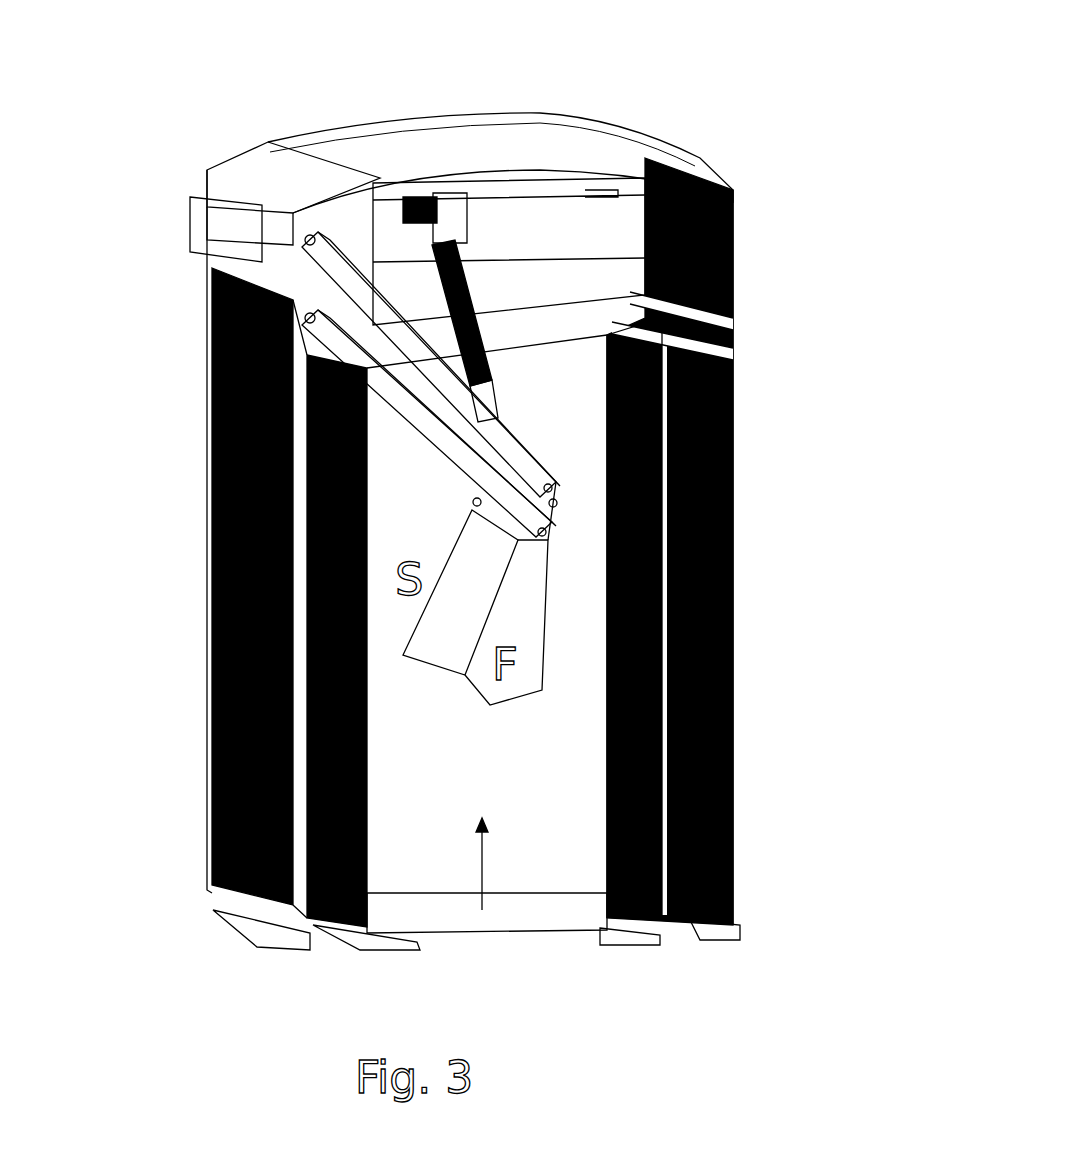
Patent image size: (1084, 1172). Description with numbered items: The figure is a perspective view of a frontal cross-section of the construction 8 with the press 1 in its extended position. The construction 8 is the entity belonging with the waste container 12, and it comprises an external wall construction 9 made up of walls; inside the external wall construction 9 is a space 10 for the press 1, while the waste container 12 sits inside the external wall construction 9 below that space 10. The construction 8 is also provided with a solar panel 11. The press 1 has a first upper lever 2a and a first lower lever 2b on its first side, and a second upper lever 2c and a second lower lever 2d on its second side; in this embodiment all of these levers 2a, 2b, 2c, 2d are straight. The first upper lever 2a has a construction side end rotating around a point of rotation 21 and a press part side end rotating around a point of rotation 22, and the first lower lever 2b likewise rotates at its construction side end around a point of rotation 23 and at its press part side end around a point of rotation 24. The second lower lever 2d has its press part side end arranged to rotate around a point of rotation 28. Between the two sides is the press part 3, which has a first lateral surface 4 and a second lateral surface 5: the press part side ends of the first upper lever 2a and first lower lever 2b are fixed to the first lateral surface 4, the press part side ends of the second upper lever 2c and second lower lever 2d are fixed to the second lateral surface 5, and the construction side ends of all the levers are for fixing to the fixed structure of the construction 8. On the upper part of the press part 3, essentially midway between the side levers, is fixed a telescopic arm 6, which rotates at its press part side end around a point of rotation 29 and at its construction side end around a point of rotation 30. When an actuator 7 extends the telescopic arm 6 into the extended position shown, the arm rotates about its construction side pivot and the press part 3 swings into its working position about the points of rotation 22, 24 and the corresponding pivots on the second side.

The press 1 is at (468, 692).
The first upper lever 2a is at (478, 429).
The first lower lever 2b is at (435, 440).
The second upper lever 2c is at (462, 443).
The second lower lever 2d is at (425, 458).
The press part 3 is at (540, 617).
The first lateral surface 4 is at (528, 636).
The second lateral surface 5 is at (400, 617).
The telescopic arm 6 is at (485, 350).
The actuator 7 is at (467, 262).
The construction 8 is at (640, 143).
The external wall construction 9 is at (730, 597).
The space 10 is at (583, 228).
The solar panel 11 is at (422, 148).
The waste container 12 is at (683, 373).
The point of rotation 21 is at (308, 242).
The point of rotation 22 is at (556, 503).
The point of rotation 23 is at (308, 320).
The point of rotation 24 is at (545, 533).
The point of rotation 28 is at (474, 503).
The point of rotation 29 is at (552, 488).
The point of rotation 30 is at (437, 200).